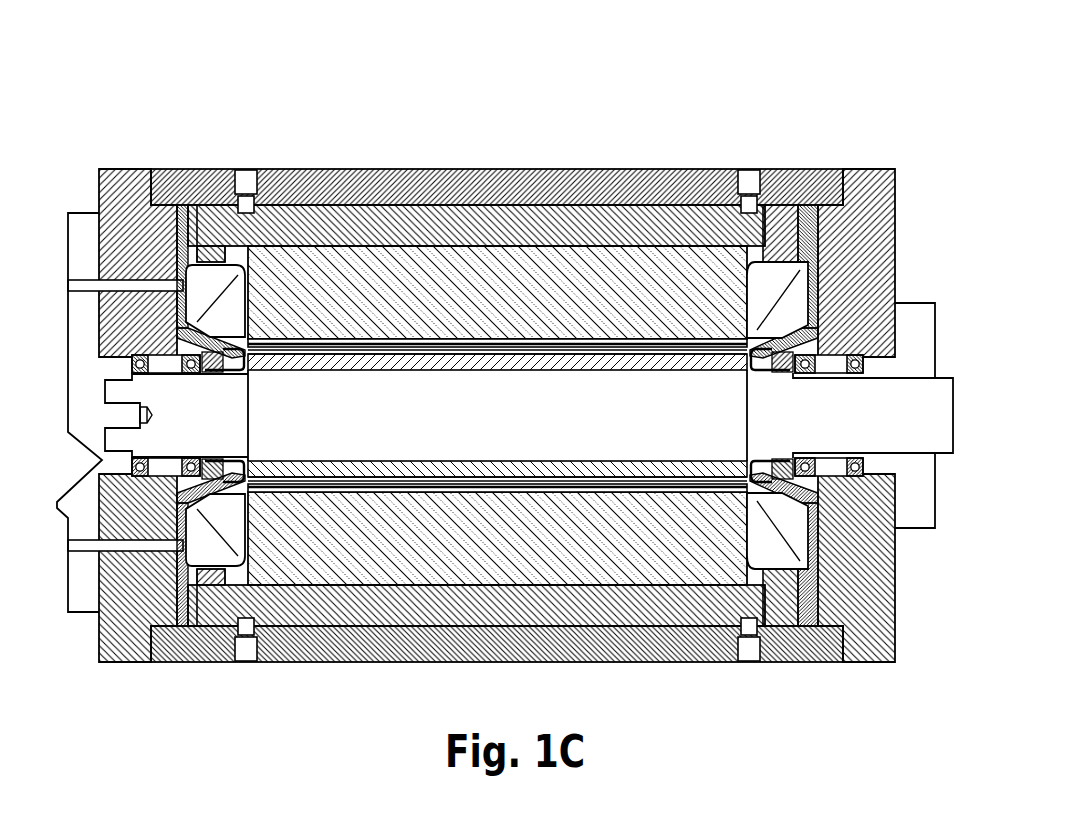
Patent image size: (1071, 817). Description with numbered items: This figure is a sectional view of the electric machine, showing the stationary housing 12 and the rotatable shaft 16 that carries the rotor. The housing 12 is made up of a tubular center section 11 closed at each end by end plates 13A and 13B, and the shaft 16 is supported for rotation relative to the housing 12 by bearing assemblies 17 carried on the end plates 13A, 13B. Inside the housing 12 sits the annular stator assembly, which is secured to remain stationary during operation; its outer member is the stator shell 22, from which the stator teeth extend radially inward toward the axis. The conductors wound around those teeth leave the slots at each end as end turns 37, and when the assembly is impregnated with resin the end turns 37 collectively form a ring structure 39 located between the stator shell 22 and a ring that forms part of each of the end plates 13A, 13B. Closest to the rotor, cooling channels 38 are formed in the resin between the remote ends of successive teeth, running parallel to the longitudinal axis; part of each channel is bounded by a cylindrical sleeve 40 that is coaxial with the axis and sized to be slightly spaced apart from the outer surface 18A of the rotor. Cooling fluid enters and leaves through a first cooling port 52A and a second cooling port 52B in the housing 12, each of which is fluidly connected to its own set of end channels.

The tubular center section 11 is at (478, 169).
The housing 12 is at (397, 169).
The end plate 13A is at (880, 169).
The end plate 13B is at (152, 250).
The shaft 16 is at (902, 393).
The bearing assembly 17 is at (190, 355).
The outer surface of the rotor 18A is at (688, 470).
The stator shell 22 is at (783, 222).
The end turns 37 is at (222, 264).
The cooling channel 38 is at (562, 490).
The ring structure 39 is at (205, 266).
The sleeve 40 is at (637, 488).
The first cooling port 52A is at (740, 169).
The second cooling port 52B is at (255, 169).